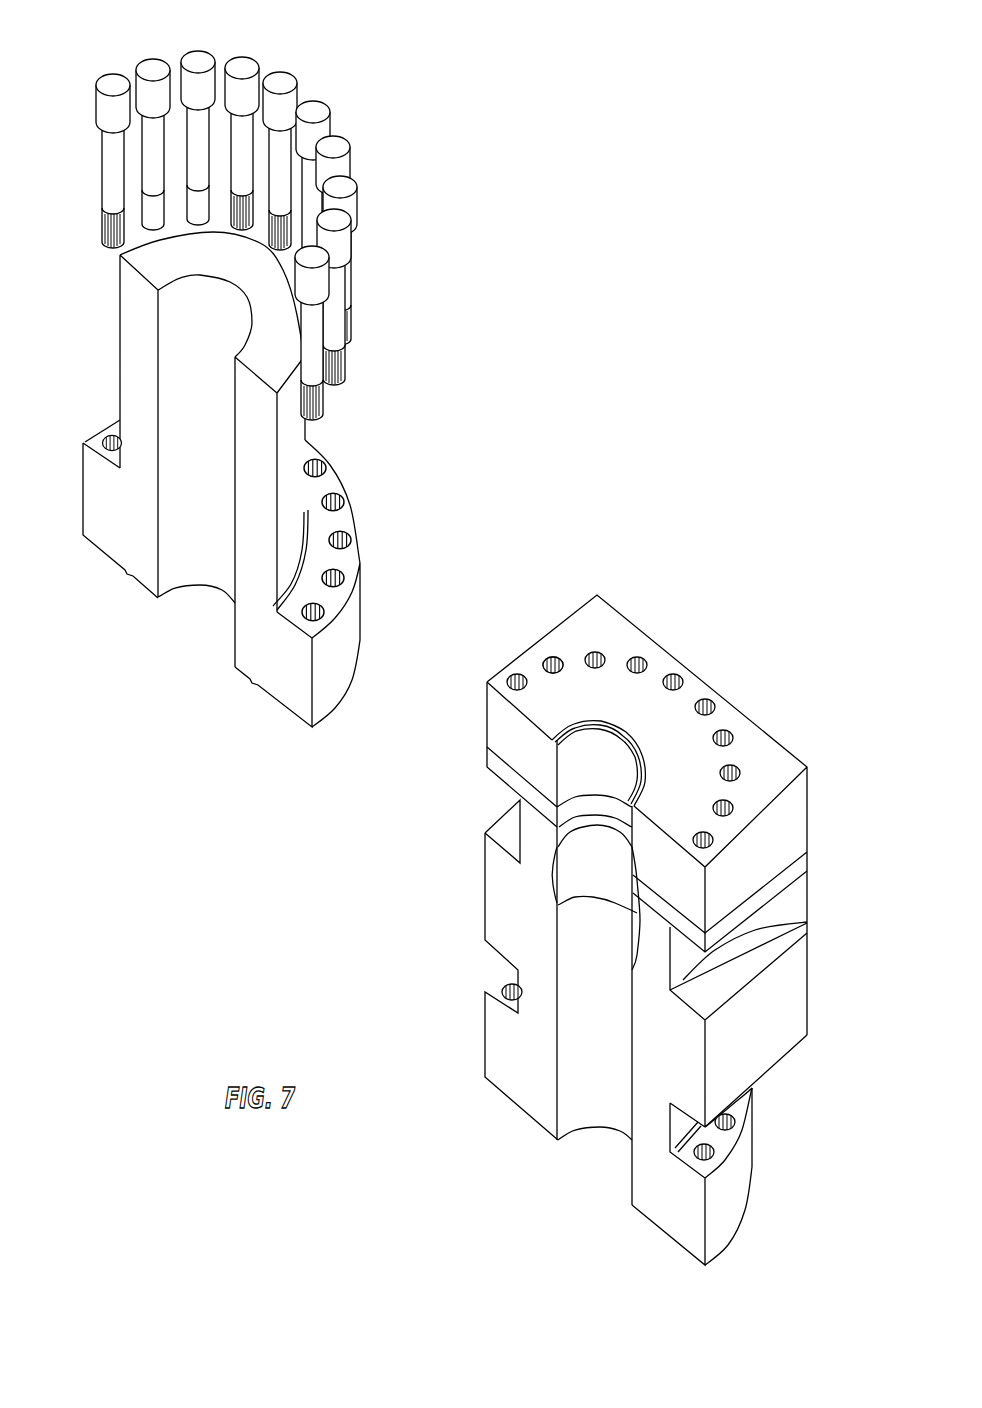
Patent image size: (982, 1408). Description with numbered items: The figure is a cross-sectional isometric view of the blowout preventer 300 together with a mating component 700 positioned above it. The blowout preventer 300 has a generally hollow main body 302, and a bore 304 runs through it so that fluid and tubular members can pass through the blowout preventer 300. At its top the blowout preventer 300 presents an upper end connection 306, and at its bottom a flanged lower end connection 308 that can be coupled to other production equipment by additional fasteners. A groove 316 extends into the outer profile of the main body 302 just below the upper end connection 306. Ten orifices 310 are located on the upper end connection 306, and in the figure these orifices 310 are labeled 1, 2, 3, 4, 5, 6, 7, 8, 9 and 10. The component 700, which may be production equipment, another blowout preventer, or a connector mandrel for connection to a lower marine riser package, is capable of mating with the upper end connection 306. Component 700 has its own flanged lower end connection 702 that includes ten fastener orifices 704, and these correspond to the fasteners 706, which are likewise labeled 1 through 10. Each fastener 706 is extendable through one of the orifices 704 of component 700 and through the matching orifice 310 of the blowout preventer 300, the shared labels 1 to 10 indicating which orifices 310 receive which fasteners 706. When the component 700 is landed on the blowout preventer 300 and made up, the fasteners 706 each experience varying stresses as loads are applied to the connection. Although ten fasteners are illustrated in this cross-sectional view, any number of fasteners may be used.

The component 700 is at (220, 479).
The flanged lower end connection 702 is at (361, 612).
The fastener orifices 704 is at (340, 503).
The fasteners 706 is at (424, 447).
The blowout preventer 300 is at (633, 894).
The main body 302 is at (793, 1008).
The bore 304 is at (598, 1075).
The upper end connection 306 is at (654, 815).
The flanged lower end connection 308 is at (493, 1061).
The orifices 310 is at (550, 655).
The groove 316 is at (790, 898).
The fastener/orifice label 1 is at (428, 268).
The fastener/orifice label 2 is at (534, 532).
The fastener/orifice label 3 is at (541, 500).
The fastener/orifice label 4 is at (536, 442).
The fastener/orifice label 5 is at (519, 391).
The fastener/orifice label 6 is at (484, 363).
The fastener/orifice label 7 is at (441, 343).
The fastener/orifice label 8 is at (396, 337).
The fastener/orifice label 9 is at (353, 345).
The fastener/orifice label 10 is at (307, 362).